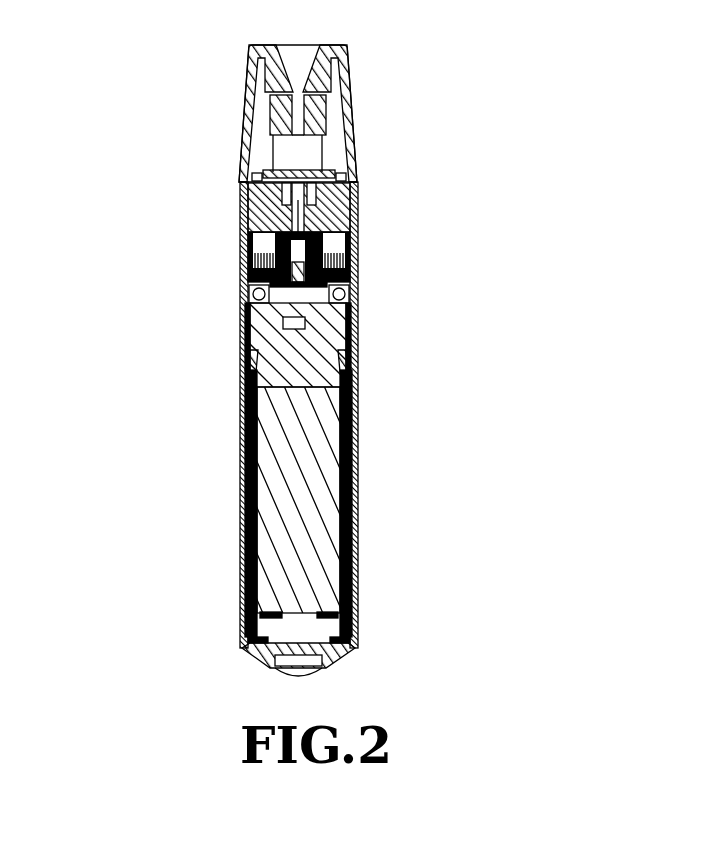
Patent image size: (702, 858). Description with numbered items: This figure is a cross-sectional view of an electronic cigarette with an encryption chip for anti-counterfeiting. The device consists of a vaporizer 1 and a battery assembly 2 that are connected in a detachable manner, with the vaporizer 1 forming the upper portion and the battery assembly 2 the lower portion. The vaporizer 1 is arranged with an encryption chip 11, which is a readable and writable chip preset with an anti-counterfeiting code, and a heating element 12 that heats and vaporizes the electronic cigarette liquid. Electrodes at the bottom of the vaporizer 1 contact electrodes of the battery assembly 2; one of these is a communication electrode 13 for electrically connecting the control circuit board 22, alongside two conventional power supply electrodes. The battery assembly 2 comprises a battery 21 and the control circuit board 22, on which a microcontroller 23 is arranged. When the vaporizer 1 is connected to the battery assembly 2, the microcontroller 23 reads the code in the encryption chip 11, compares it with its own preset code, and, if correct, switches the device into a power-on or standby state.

The vaporizer 1 is at (258, 138).
The encryption chip 11 is at (352, 250).
The heating element 12 is at (305, 170).
The communication electrode 13 is at (240, 222).
The battery assembly 2 is at (240, 468).
The battery 21 is at (318, 510).
The control circuit board 22 is at (327, 327).
The microcontroller 23 is at (292, 322).